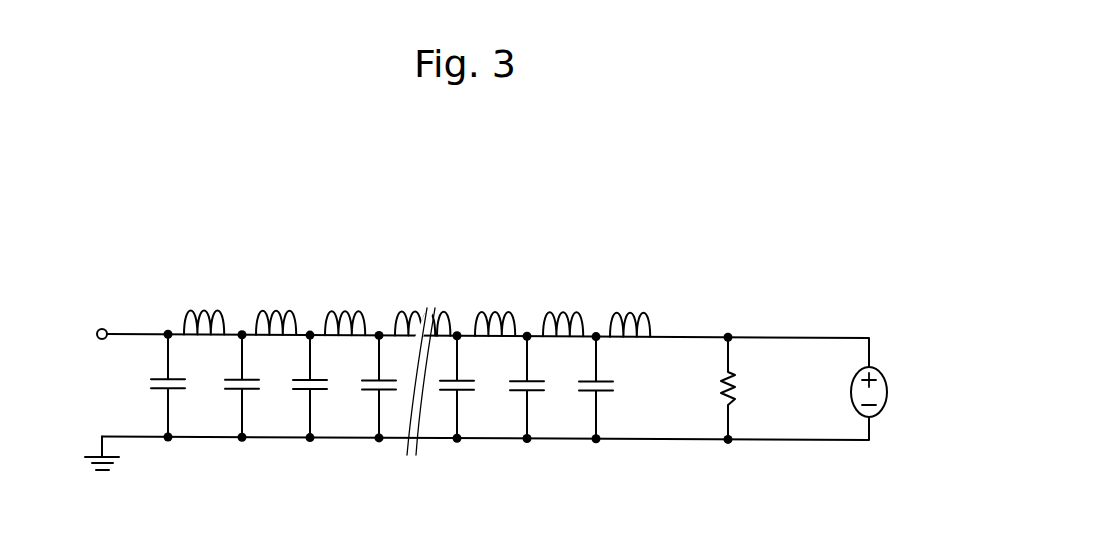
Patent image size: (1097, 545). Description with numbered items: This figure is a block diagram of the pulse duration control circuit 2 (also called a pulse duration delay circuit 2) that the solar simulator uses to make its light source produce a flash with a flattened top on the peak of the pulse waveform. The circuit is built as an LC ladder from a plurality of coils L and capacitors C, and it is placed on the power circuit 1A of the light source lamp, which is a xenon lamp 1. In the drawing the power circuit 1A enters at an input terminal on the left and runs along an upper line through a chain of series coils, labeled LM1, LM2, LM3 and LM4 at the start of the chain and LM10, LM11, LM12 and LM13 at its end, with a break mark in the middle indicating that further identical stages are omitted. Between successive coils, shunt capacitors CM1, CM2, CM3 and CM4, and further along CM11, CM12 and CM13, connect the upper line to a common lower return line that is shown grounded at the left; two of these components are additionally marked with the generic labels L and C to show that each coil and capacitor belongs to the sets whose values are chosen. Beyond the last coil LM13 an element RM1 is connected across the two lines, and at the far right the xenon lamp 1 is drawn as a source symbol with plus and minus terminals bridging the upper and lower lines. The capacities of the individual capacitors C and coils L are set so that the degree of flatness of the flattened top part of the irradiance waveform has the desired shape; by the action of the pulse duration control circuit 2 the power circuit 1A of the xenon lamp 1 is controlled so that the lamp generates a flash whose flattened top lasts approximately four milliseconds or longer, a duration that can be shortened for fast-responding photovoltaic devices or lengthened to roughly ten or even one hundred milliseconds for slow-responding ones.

The xenon lamp 1 is at (887, 401).
The power circuit 1A is at (110, 323).
The pulse duration control circuit 2 is at (481, 259).
The coil L is at (499, 284).
The capacitor C is at (459, 402).
The inductor LM1 is at (204, 311).
The inductor LM2 is at (276, 311).
The inductor LM3 is at (345, 311).
The inductor LM4 is at (422, 312).
The inductor LM10 is at (457, 295).
The inductor LM11 is at (500, 312).
The inductor LM12 is at (565, 312).
The inductor LM13 is at (635, 312).
The capacitor CM1 is at (168, 402).
The capacitor CM2 is at (242, 402).
The capacitor CM3 is at (310, 402).
The capacitor CM4 is at (379, 402).
The capacitor CM11 is at (462, 403).
The capacitor CM12 is at (530, 403).
The capacitor CM13 is at (600, 403).
The termination resistor RM1 is at (727, 401).